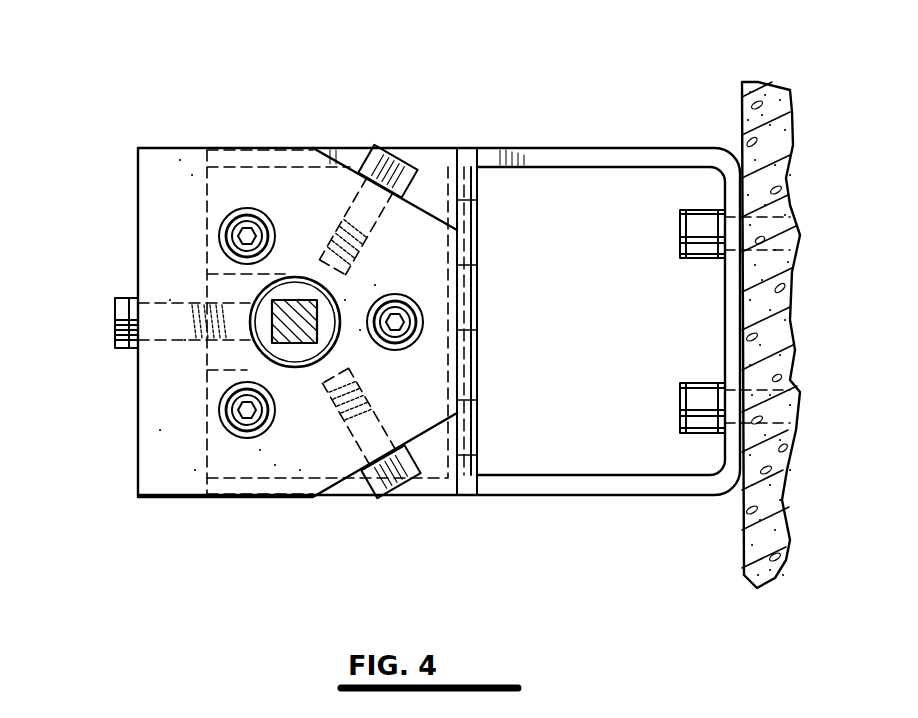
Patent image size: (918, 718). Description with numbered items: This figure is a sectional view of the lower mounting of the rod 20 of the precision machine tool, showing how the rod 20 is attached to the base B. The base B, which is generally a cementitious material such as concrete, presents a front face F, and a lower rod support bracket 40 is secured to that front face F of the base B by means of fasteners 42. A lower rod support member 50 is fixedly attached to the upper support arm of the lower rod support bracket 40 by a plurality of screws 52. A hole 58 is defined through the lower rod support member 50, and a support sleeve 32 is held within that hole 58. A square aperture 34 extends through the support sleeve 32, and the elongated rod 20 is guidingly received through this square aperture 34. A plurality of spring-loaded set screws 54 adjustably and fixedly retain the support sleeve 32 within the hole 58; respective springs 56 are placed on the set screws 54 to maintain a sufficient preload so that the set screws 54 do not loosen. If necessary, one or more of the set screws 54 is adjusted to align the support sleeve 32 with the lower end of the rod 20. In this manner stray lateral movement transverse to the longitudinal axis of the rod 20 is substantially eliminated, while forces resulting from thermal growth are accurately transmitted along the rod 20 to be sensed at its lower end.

The rod 20 is at (272, 338).
The support sleeve 32 is at (295, 277).
The square aperture 34 is at (318, 318).
The lower rod support bracket 40 is at (548, 150).
The fasteners 42 is at (685, 383).
The lower rod support member 50 is at (138, 490).
The screws 52 is at (247, 208).
The spring-loaded set screws 54 is at (368, 150).
The springs 56 is at (200, 306).
The hole 58 is at (295, 363).
The front face F is at (742, 108).
The base B is at (783, 140).